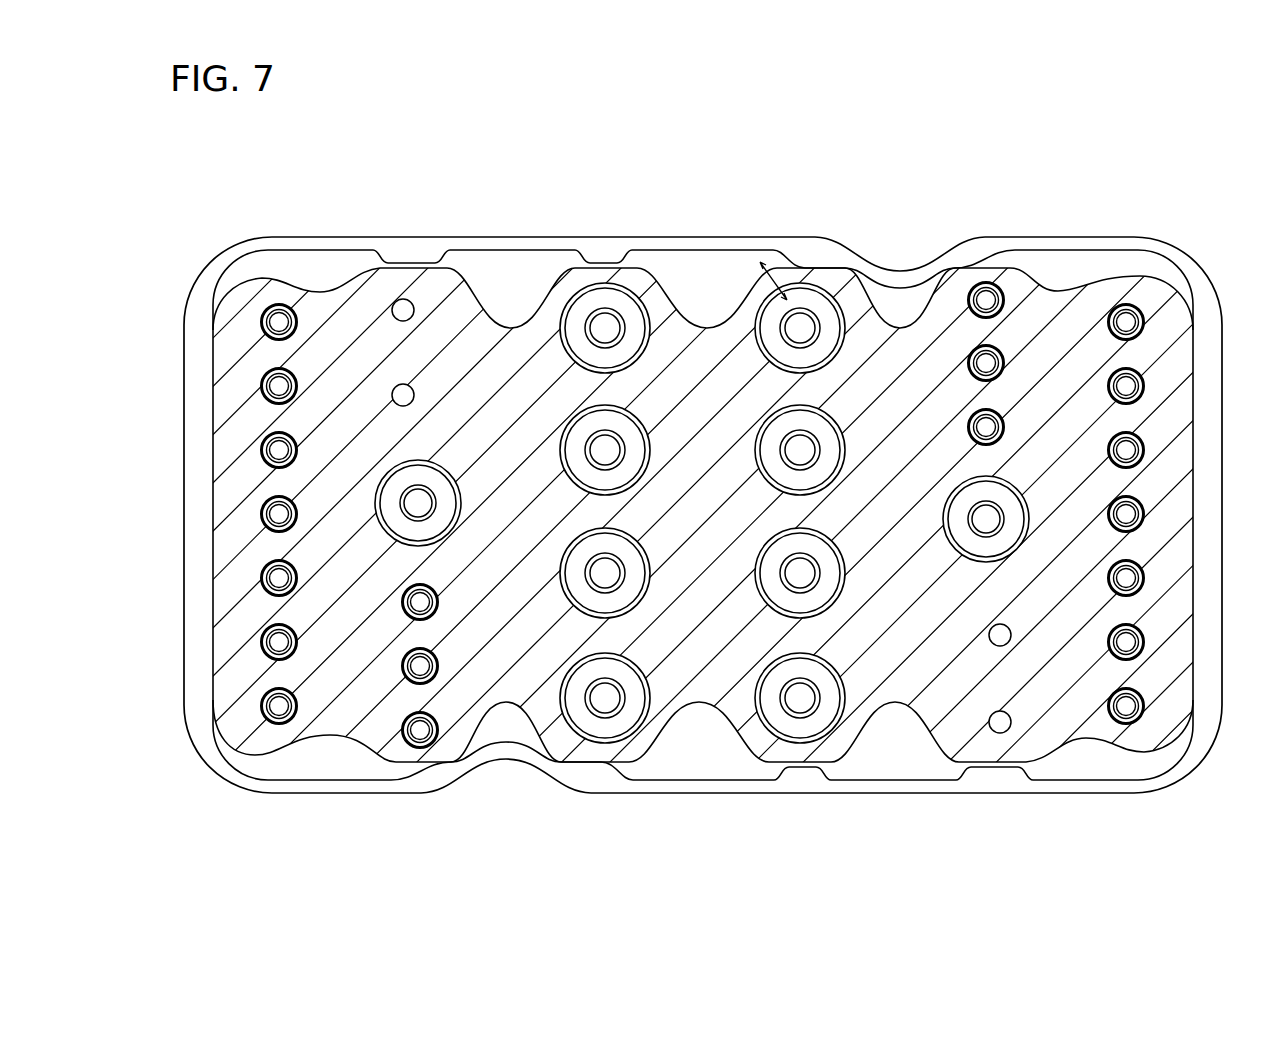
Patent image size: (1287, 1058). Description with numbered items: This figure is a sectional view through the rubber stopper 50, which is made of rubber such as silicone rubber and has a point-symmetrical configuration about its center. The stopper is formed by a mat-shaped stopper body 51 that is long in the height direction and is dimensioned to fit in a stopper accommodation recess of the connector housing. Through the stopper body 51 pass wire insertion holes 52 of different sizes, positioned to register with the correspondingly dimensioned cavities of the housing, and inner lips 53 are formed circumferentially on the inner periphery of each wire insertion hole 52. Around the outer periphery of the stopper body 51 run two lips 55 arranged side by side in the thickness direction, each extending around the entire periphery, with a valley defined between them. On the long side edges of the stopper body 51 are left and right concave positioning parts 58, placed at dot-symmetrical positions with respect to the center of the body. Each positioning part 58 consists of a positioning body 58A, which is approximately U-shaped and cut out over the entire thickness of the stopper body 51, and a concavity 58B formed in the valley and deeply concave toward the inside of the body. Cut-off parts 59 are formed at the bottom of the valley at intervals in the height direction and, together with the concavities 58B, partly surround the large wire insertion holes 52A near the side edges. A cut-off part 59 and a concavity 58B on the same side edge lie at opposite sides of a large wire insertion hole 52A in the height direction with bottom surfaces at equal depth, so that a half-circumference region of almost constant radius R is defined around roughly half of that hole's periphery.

The rubber stopper 50 is at (688, 236).
The stopper body 51 is at (653, 260).
The wire insertion holes 52 is at (280, 524).
The large wire insertion holes 52A is at (801, 322).
The inner lips 53 is at (810, 318).
The lips 55 is at (1093, 236).
The positioning parts 58 is at (703, 516).
The positioning body 58A is at (926, 262).
The concavity 58B is at (900, 318).
The cut-off parts 59 is at (317, 290).
The radius R is at (760, 260).